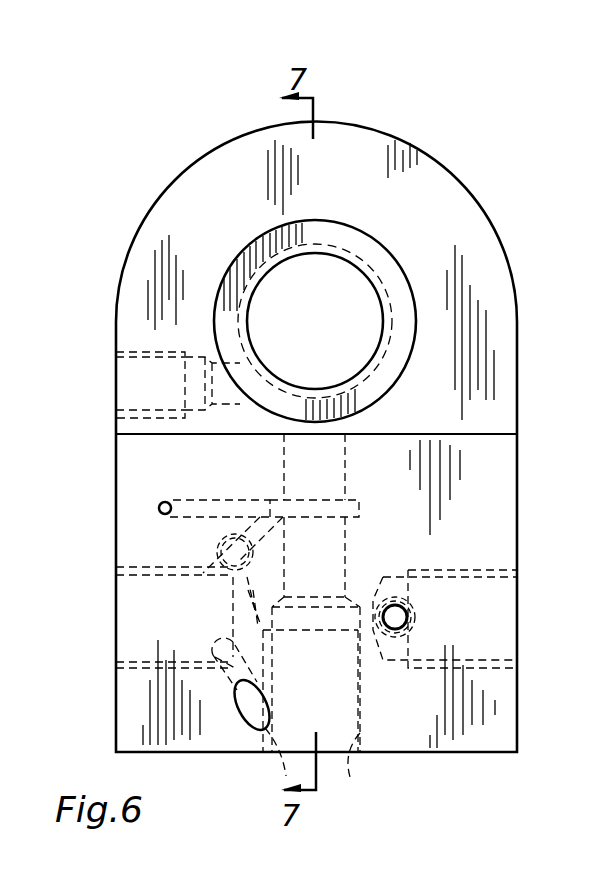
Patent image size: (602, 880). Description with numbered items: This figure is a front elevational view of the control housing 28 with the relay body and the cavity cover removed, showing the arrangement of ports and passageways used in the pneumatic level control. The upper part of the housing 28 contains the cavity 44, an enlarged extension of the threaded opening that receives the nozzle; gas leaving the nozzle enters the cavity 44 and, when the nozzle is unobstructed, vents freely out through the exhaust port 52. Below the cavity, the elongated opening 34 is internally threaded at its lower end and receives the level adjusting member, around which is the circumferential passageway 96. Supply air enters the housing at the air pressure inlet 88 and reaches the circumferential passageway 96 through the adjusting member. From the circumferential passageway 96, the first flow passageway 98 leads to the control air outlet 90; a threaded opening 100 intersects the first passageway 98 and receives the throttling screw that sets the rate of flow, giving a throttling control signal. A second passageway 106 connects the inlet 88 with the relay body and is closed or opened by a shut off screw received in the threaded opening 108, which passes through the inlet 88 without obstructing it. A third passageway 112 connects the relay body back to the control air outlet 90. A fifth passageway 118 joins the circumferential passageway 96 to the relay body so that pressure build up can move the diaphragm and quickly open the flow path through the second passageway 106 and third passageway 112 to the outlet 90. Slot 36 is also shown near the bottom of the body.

The control housing 28 is at (493, 507).
The cavity 44 is at (342, 274).
The exhaust port 52 is at (130, 411).
The circumferential passageway 96 is at (349, 501).
The fifth passageway 118 is at (159, 506).
The threaded opening 100 is at (222, 540).
The first flow passageway 98 is at (273, 530).
The elongated opening 34 is at (346, 565).
The slot 36 is at (285, 768).
The third passageway 112 is at (250, 728).
The control air outlet 90 is at (140, 662).
The air pressure inlet 88 is at (501, 668).
The second passageway 106 is at (408, 617).
The threaded opening 108 is at (417, 608).